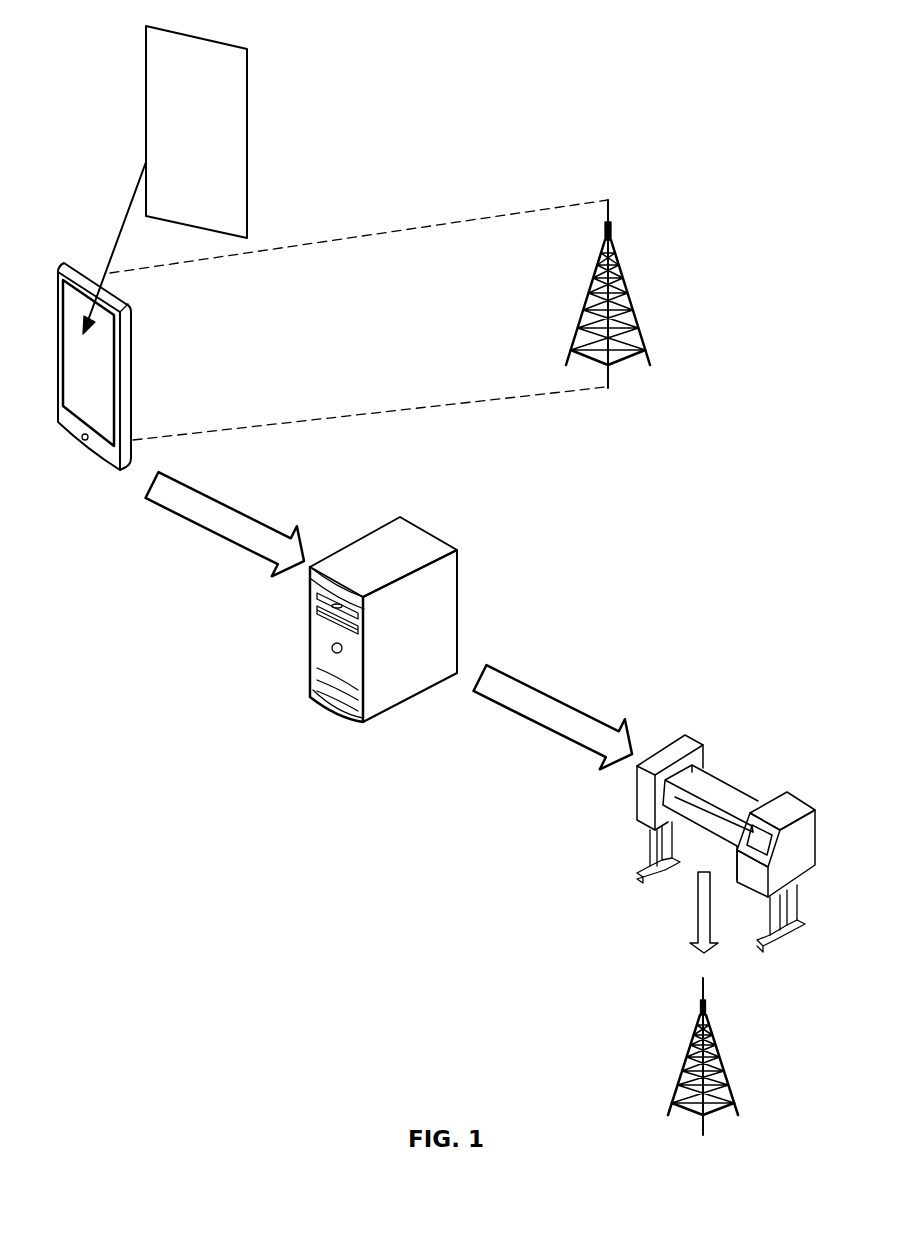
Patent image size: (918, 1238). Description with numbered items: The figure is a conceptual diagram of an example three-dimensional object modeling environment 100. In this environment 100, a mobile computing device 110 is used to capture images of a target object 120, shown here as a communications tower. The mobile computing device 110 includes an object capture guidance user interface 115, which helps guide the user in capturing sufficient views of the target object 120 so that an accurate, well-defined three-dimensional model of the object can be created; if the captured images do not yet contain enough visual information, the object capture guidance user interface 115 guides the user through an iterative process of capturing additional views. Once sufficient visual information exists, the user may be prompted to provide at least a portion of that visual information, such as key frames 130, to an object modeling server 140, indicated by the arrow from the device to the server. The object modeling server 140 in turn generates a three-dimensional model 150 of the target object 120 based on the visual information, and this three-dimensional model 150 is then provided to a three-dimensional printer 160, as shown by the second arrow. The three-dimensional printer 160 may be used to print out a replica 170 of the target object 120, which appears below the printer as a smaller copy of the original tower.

The three-dimensional object modeling environment 100 is at (702, 72).
The mobile computing device 110 is at (136, 298).
The object capture guidance user interface 115 is at (246, 47).
The target object 120 is at (618, 272).
The key frames 130 is at (228, 503).
The object modeling server 140 is at (427, 528).
The three-dimensional model 150 is at (548, 692).
The three-dimensional printer 160 is at (705, 743).
The replica 170 is at (712, 1042).